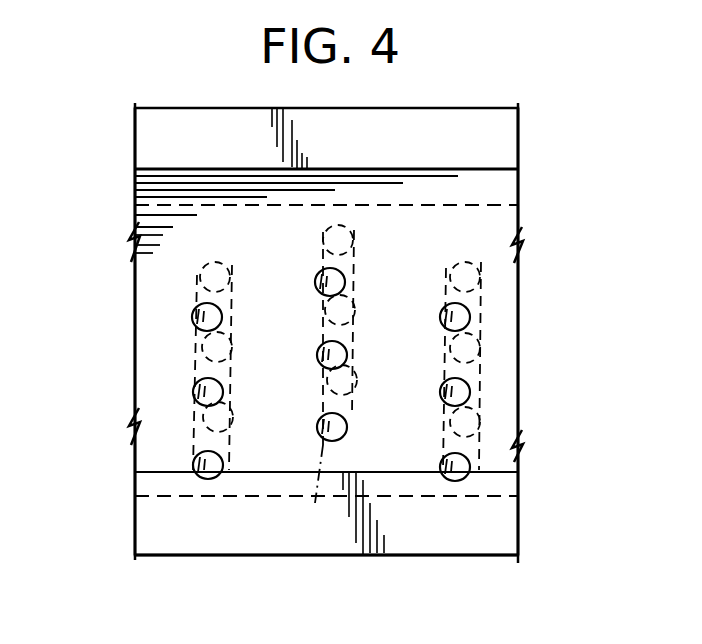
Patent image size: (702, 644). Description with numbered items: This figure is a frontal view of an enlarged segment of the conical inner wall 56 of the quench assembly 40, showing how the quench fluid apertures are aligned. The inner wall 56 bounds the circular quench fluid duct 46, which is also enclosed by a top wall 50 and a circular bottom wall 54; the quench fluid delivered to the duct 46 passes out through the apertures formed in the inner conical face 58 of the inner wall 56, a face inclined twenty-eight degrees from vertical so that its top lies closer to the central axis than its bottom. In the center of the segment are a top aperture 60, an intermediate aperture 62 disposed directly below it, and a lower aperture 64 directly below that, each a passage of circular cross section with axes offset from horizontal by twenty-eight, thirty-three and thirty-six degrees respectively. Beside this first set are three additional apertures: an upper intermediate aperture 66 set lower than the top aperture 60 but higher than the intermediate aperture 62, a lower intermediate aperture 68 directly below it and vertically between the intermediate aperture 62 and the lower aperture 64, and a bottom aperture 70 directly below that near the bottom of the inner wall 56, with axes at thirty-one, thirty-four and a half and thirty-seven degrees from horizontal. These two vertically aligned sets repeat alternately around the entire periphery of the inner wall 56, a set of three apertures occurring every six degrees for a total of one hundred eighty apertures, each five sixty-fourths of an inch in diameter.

The quench assembly 40 is at (127, 265).
The quench fluid duct 46 is at (507, 408).
The top wall 50 is at (507, 190).
The bottom wall 54 is at (420, 557).
The inner wall 56 is at (140, 346).
The inner conical face 58 is at (502, 325).
The top aperture 60 is at (318, 275).
The intermediate aperture 62 is at (318, 353).
The lower aperture 64 is at (318, 428).
The upper intermediate aperture 66 is at (467, 312).
The lower intermediate aperture 68 is at (463, 387).
The bottom aperture 70 is at (455, 467).